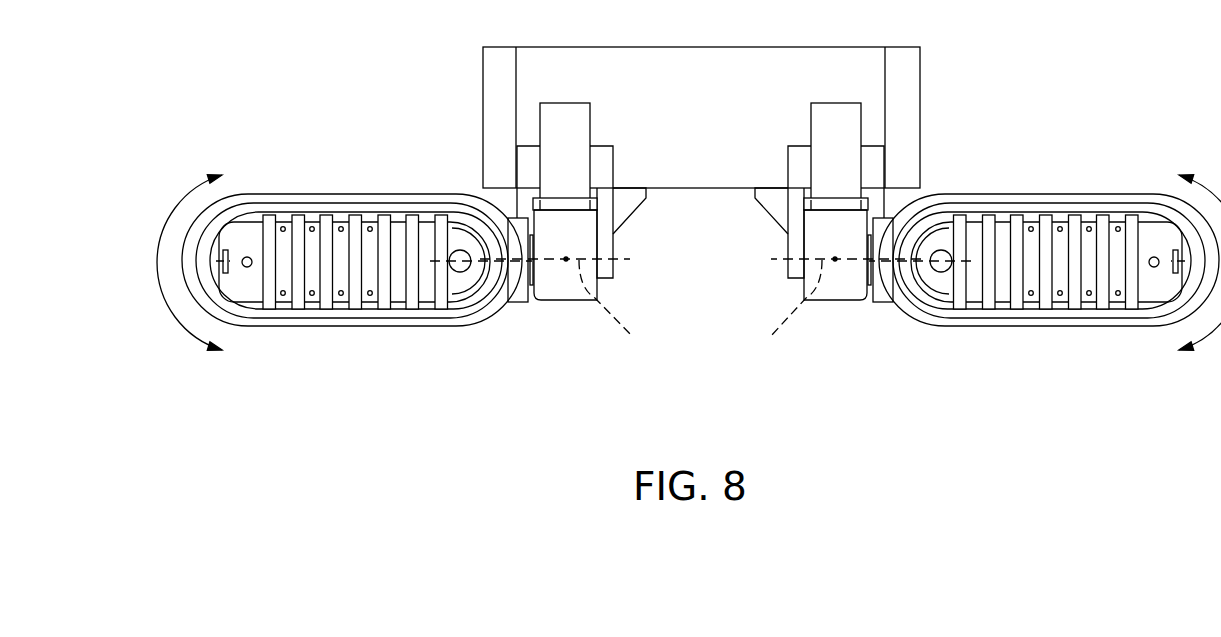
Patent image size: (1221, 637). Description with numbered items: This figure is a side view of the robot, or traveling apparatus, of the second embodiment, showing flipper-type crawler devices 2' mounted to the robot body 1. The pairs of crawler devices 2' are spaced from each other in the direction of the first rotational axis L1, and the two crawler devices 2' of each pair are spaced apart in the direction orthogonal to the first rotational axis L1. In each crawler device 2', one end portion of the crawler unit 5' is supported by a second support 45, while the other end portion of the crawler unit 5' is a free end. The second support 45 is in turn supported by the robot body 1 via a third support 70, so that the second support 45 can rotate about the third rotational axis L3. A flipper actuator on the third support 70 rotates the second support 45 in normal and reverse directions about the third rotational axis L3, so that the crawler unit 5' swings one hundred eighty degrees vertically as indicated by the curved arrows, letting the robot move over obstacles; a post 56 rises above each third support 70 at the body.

The robot body 1 is at (921, 68).
The post 56 is at (577, 133).
The third support 70 is at (614, 246).
The second support 45 is at (572, 292).
The crawler device 2' is at (700, 311).
The crawler unit 5' is at (689, 226).
The third rotational axis L3 is at (566, 259).
The first rotational axis L1 is at (700, 314).